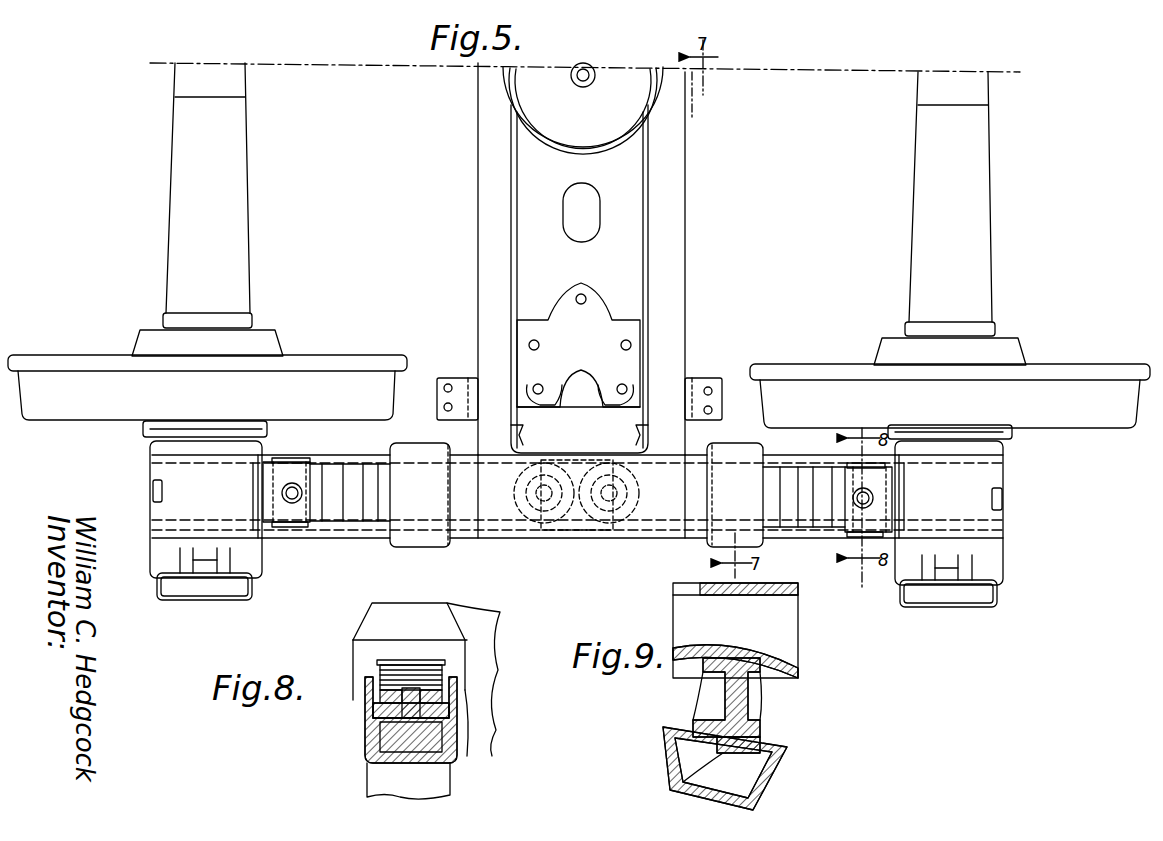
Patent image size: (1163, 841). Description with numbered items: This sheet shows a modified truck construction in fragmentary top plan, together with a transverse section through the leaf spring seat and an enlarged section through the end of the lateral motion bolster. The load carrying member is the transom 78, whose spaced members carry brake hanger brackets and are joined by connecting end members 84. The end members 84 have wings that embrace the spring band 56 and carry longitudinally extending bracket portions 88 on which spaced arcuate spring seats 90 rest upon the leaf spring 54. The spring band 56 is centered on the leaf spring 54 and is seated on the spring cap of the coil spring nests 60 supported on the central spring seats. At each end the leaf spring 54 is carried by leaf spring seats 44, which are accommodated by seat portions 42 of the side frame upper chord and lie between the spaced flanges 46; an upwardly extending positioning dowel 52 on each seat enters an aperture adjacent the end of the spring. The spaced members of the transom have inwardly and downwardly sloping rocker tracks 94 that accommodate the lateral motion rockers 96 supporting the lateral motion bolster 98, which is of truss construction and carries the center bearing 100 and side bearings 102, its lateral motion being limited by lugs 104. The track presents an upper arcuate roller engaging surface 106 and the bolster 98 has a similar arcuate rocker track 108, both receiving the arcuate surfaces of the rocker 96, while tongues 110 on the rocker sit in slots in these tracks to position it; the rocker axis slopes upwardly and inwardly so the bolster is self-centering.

In FIG. 8, the seat portions 42 is at (438, 724).
In FIG. 8, the leaf spring seats 44 is at (414, 690).
In FIG. 5, the spaced flanges 46 is at (818, 540).
In FIG. 8, the spaced flanges 46 is at (370, 690).
In FIG. 8, the positioning dowel 52 is at (411, 690).
In FIG. 5, the leaf spring 54 is at (367, 512).
In FIG. 5, the spring band 56 is at (790, 480).
In FIG. 5, the coil spring nests 60 is at (597, 515).
In FIG. 5, the transom 78 is at (685, 228).
In FIG. 5, the end members 84 is at (503, 512).
In FIG. 5, the bracket portions 88 is at (668, 513).
In FIG. 5, the arcuate spring seats 90 is at (422, 510).
In FIG. 9, the rocker tracks 94 is at (780, 765).
In FIG. 9, the lateral motion rockers 96 is at (740, 707).
In FIG. 5, the lateral motion bolster 98 is at (532, 175).
In FIG. 9, the lateral motion bolster 98 is at (783, 626).
In FIG. 5, the center bearing 100 is at (543, 95).
In FIG. 5, the side bearings 102 is at (538, 331).
In FIG. 5, the lugs 104 is at (520, 440).
In FIG. 9, the upper arcuate roller engaging surface 106 is at (762, 742).
In FIG. 9, the arcuate rocker track 108 is at (778, 676).
In FIG. 9, the tongues 110 is at (675, 772).